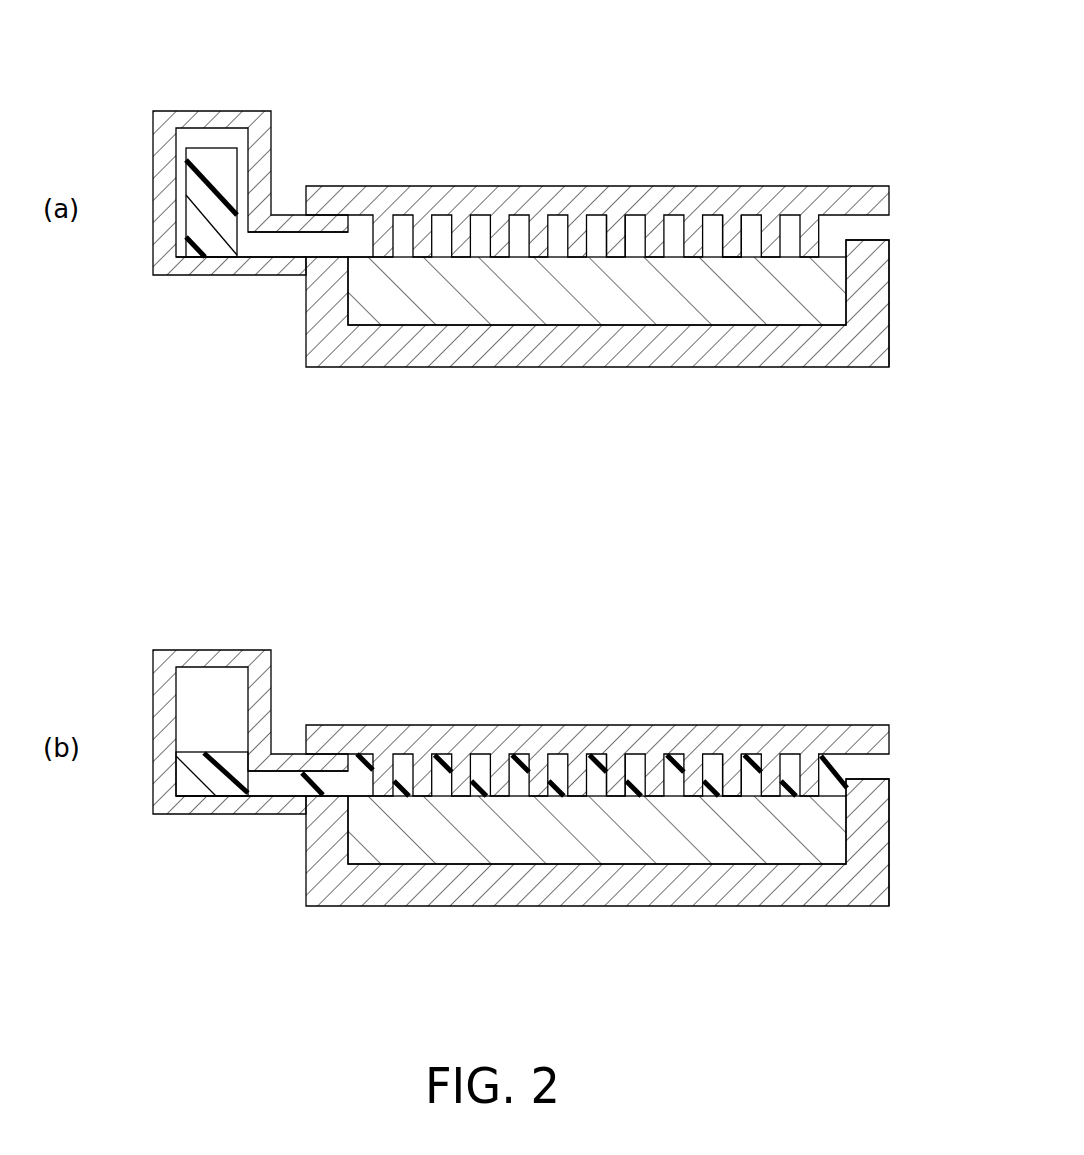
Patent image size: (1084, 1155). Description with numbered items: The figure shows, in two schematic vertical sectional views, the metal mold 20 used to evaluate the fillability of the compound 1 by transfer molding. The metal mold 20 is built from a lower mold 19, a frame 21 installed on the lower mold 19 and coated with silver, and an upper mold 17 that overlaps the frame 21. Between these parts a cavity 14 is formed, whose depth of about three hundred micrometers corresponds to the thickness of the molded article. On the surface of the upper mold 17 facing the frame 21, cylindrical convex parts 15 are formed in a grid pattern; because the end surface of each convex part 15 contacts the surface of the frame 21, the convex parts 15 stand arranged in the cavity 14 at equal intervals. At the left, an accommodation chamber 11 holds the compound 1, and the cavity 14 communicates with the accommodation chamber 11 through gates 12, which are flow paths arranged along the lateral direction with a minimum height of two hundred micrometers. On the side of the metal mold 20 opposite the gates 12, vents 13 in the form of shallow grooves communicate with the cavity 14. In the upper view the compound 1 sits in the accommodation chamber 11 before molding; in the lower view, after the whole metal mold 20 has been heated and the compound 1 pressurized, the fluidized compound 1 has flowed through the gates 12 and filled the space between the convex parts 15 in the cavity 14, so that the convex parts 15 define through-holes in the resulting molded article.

The metal mold 20 is at (558, 494).
The accommodation chamber 11 is at (182, 193).
The compound 1 is at (222, 245).
The gate 12 is at (284, 247).
The upper mold 17 is at (446, 200).
The cavity 14 is at (752, 248).
The convex part 15 is at (620, 217).
The vent 13 is at (868, 234).
The lower mold 19 is at (617, 345).
The frame 21 is at (430, 305).